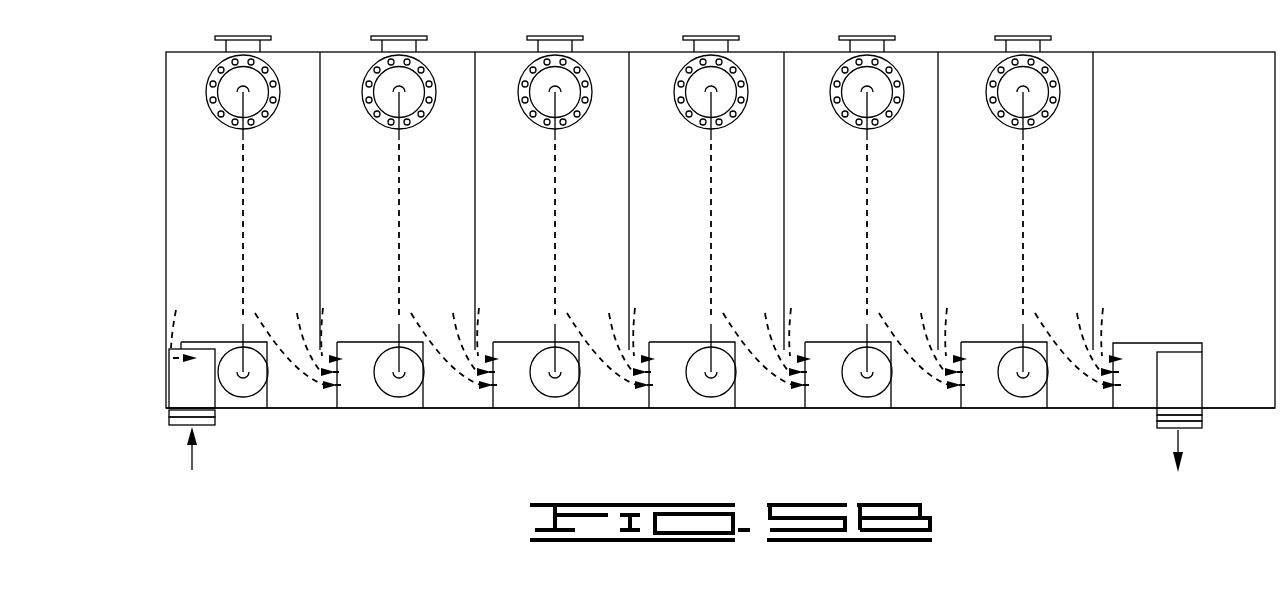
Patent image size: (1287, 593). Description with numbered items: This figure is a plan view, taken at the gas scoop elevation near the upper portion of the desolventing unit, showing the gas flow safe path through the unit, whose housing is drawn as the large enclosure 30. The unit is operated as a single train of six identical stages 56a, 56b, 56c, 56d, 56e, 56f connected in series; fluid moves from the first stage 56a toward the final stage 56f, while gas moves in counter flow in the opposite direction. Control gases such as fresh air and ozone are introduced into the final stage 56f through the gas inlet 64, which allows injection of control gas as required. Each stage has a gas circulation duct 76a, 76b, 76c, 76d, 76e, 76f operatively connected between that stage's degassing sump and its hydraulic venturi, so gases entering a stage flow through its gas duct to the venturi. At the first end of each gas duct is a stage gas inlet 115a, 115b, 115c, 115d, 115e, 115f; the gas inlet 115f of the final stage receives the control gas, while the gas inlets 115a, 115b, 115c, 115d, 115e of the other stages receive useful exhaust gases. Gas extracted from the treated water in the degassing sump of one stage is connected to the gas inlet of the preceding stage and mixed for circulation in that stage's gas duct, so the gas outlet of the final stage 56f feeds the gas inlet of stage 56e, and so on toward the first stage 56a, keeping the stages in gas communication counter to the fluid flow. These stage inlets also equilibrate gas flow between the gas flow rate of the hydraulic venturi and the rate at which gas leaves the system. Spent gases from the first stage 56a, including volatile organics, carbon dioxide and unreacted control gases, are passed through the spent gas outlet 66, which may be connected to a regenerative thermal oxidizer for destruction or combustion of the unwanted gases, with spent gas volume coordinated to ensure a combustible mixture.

The tank 30 is at (1195, 82).
The first stage 56a is at (1077, 82).
The stage 56b is at (921, 82).
The stage 56c is at (765, 82).
The stage 56d is at (609, 82).
The stage 56e is at (453, 82).
The final stage 56f is at (297, 82).
The gas inlet 64 is at (168, 413).
The spent gas outlet 66 is at (1202, 430).
The gas circulation duct 76a is at (1047, 385).
The gas circulation duct 76b is at (891, 385).
The gas circulation duct 76c is at (735, 385).
The gas circulation duct 76d is at (579, 385).
The gas circulation duct 76e is at (423, 385).
The gas circulation duct 76f is at (267, 385).
The gas inlet 115a is at (981, 387).
The gas inlet 115b is at (825, 387).
The gas inlet 115c is at (669, 387).
The gas inlet 115d is at (513, 387).
The gas inlet 115e is at (357, 387).
The gas inlet 115f is at (223, 408).